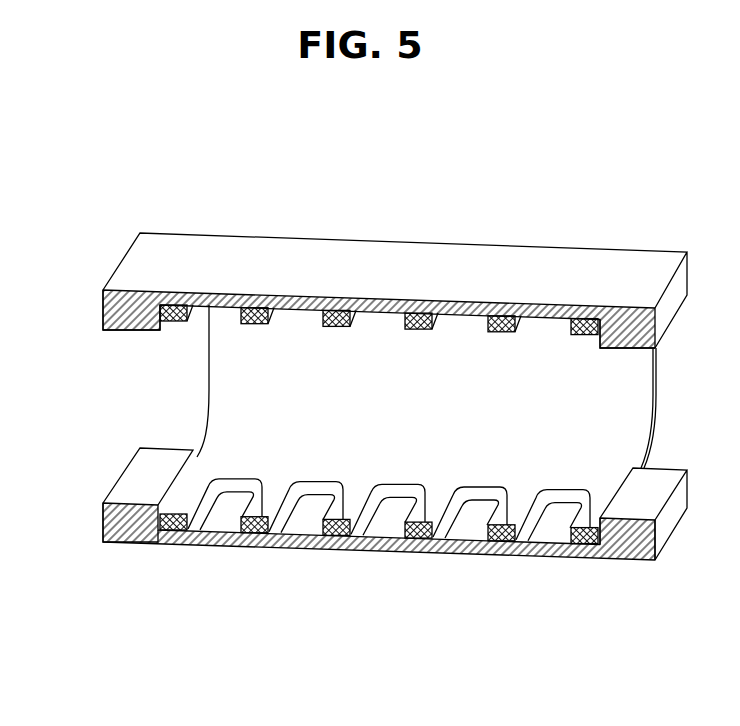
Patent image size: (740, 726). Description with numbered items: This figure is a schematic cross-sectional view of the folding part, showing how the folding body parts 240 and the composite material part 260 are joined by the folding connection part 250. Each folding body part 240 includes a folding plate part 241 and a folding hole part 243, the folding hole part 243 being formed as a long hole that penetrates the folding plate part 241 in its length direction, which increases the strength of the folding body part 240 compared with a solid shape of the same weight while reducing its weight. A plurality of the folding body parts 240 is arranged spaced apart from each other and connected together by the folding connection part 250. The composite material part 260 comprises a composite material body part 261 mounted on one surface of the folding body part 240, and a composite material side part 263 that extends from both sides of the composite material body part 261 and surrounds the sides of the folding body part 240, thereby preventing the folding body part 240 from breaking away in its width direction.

The folding body part 240 is at (212, 133).
The folding plate part 241 is at (340, 313).
The folding hole part 243 is at (292, 313).
The folding connection part 250 is at (250, 387).
The composite material part 260 is at (502, 133).
The composite material body part 261 is at (528, 262).
The composite material side part 263 is at (625, 330).